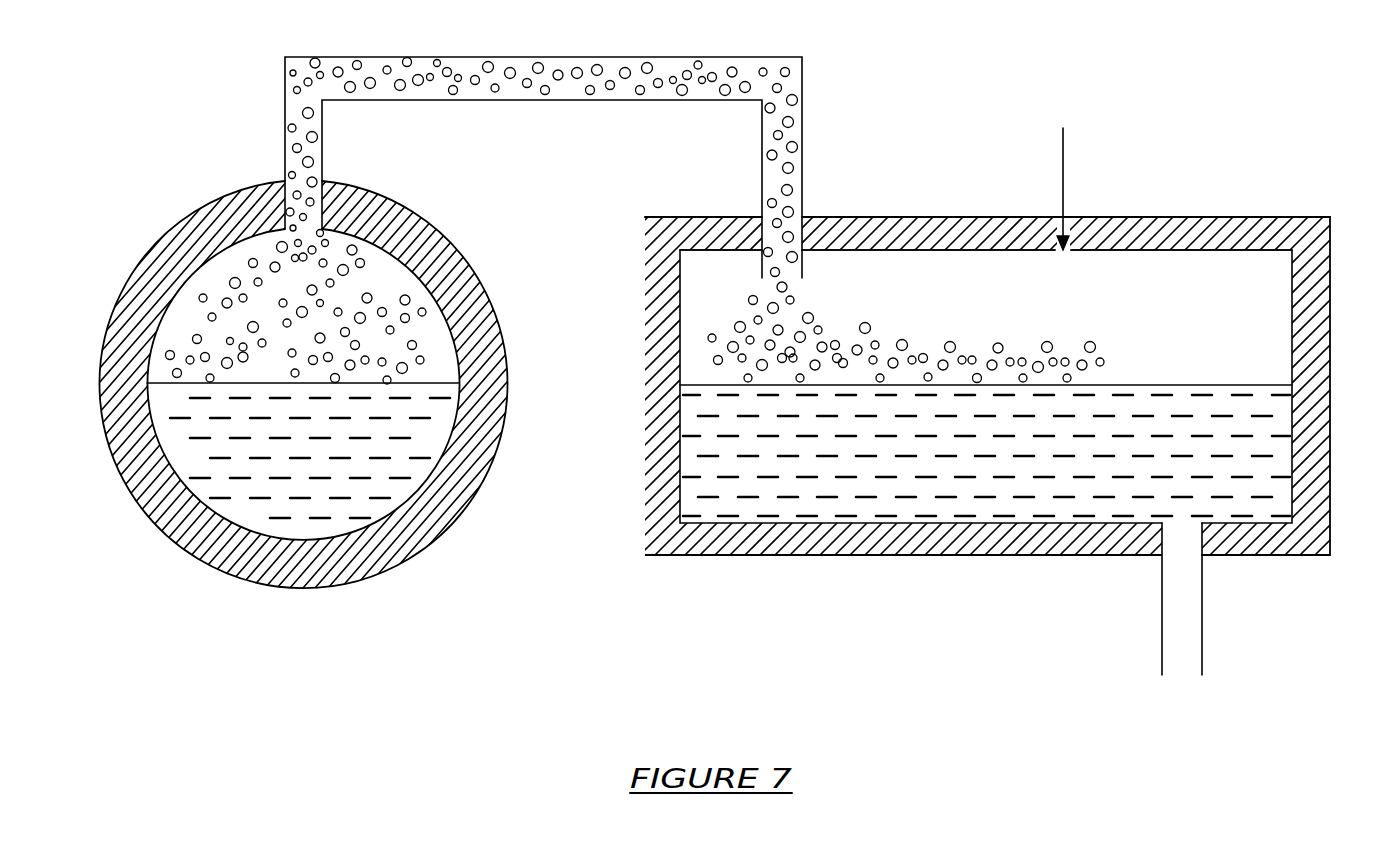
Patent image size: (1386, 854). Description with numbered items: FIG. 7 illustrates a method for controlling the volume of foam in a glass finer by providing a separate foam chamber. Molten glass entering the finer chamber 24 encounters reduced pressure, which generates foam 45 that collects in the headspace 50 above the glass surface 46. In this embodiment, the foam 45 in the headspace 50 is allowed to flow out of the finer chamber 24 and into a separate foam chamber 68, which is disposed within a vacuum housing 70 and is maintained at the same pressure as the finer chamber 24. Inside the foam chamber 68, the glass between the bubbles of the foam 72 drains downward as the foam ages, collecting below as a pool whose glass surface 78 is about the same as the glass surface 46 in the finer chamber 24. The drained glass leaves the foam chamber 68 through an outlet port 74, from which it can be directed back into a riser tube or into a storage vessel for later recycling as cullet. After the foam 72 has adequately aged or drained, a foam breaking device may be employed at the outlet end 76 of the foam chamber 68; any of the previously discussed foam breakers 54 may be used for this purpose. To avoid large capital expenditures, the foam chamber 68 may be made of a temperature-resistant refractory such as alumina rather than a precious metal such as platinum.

The finer chamber 24 is at (190, 545).
The foam 45 is at (224, 299).
The glass surface 46 is at (430, 382).
The headspace 50 is at (393, 278).
The foam breakers 54 is at (1065, 170).
The foam chamber 68 is at (704, 293).
The vacuum housing 70 is at (643, 453).
The foam 72 is at (868, 323).
The outlet port 74 is at (1182, 552).
The outlet end 76 is at (1190, 248).
The glass surface 78 is at (1218, 385).